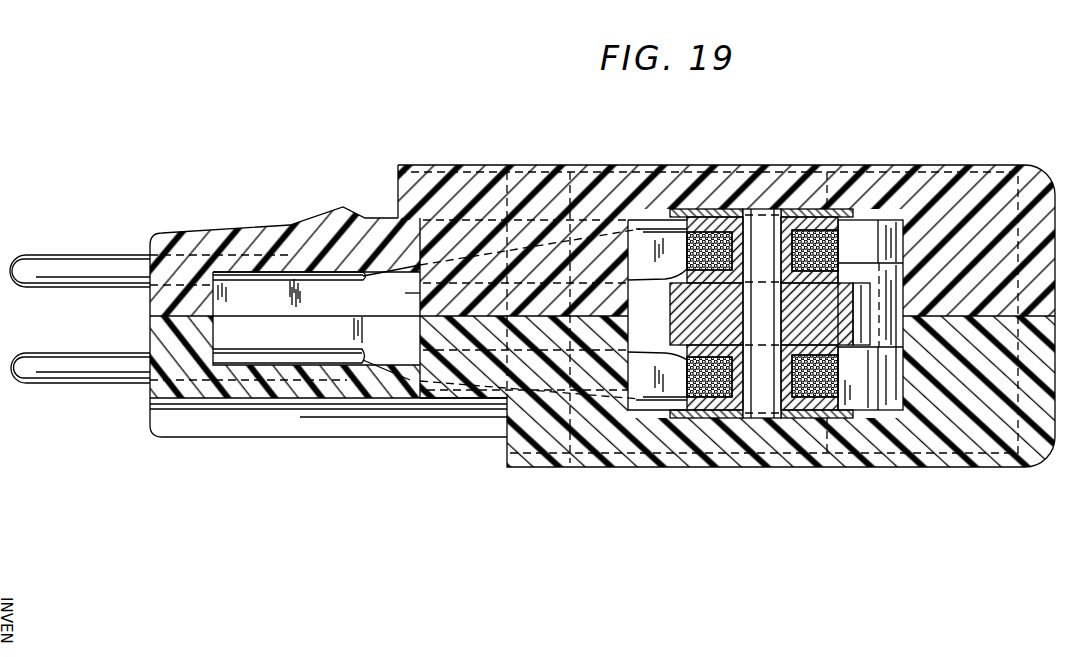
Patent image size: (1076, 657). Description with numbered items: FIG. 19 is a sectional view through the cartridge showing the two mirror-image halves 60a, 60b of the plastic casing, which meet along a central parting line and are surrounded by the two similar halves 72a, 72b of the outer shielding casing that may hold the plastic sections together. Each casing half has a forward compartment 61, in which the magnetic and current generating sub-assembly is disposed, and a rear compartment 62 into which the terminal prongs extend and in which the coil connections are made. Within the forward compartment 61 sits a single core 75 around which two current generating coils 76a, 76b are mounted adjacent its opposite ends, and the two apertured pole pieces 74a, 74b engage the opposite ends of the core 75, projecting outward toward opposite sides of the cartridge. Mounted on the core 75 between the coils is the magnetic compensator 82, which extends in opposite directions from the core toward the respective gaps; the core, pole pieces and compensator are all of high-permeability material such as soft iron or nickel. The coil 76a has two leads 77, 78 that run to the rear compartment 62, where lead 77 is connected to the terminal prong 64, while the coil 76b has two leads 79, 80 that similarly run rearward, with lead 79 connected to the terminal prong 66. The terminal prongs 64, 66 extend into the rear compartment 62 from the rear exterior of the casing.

The casing half 60a is at (989, 174).
The casing half 60b is at (1003, 462).
The forward compartment 61 is at (641, 413).
The rear compartment 62 is at (265, 290).
The terminal prong 64 is at (66, 252).
The terminal prong 66 is at (73, 383).
The shielding casing half 72a is at (795, 165).
The shielding casing half 72b is at (950, 462).
The pole piece 74a is at (708, 209).
The pole piece 74b is at (710, 420).
The core 75 is at (760, 420).
The current generating coil 76a is at (834, 249).
The current generating coil 76b is at (837, 376).
The lead 77 is at (386, 279).
The lead 78 is at (406, 293).
The lead 79 is at (368, 352).
The lead 80 is at (421, 378).
The magnetic compensator 82 is at (670, 330).